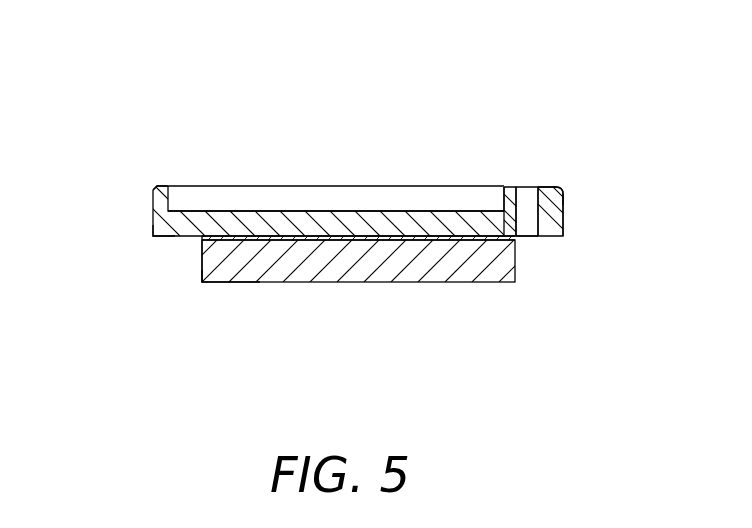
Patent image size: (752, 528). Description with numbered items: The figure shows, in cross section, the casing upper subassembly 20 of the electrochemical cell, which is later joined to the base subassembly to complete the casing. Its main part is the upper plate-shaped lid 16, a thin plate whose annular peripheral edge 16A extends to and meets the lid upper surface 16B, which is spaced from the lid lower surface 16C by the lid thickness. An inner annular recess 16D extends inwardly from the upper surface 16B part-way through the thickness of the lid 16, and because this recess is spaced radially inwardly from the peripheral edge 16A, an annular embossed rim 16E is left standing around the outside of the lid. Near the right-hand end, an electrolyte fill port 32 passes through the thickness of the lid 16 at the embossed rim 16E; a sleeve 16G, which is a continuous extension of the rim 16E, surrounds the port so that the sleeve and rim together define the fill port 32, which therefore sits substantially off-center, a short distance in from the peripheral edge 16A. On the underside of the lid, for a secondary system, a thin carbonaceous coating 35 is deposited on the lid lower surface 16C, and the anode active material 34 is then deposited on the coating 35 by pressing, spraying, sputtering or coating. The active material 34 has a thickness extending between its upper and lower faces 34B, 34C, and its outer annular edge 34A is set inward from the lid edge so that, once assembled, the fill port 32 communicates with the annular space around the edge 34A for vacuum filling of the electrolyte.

The casing upper subassembly 20 is at (570, 72).
The lid 16 is at (192, 216).
The annular peripheral edge 16A is at (563, 213).
The lid upper surface 16B is at (152, 180).
The lid lower surface 16C is at (166, 236).
The inner annular recess 16D is at (483, 210).
The annular embossed rim 16E is at (558, 188).
The sleeve 16G is at (507, 187).
The electrolyte fill port 32 is at (528, 237).
The anode active material 34 is at (260, 267).
The outer annular edge of active material 34A is at (201, 260).
The upper face of active material 34B is at (202, 282).
The lower face of active material 34C is at (237, 282).
The carbonaceous coating 35 is at (318, 235).